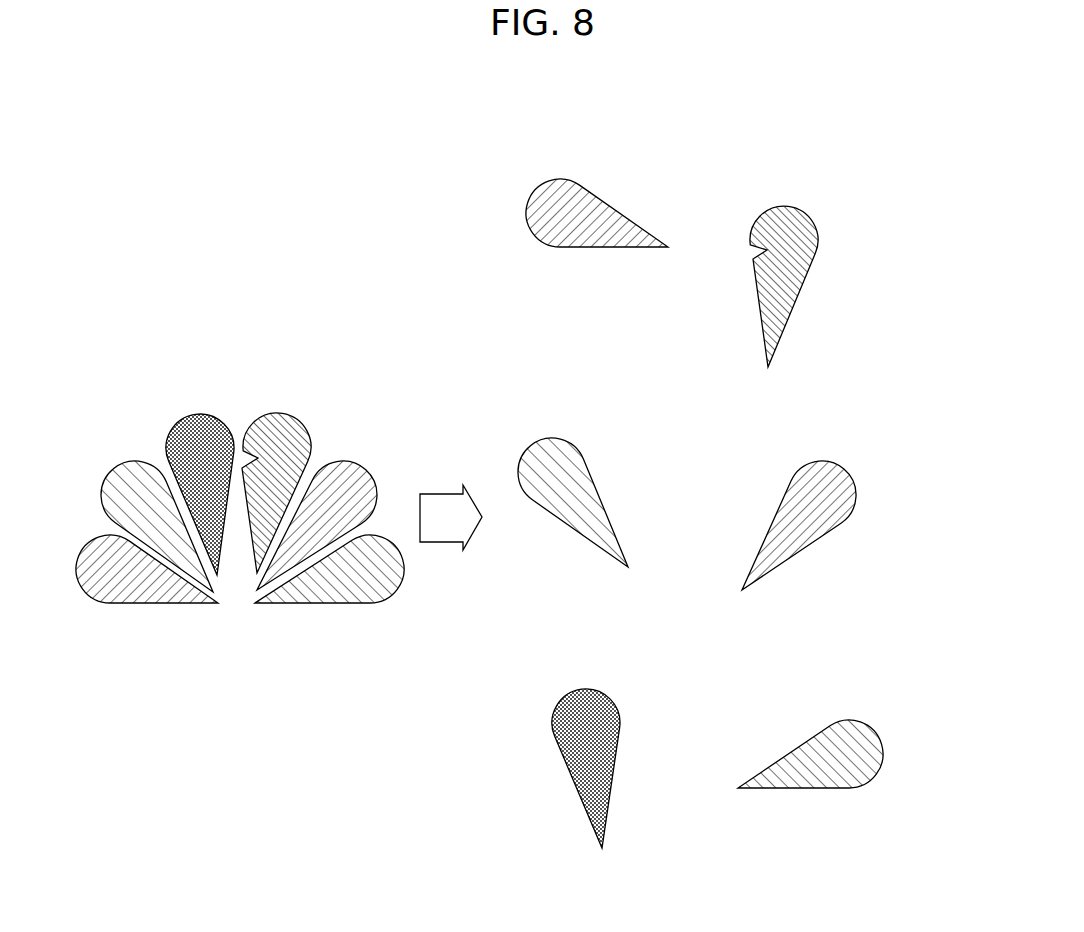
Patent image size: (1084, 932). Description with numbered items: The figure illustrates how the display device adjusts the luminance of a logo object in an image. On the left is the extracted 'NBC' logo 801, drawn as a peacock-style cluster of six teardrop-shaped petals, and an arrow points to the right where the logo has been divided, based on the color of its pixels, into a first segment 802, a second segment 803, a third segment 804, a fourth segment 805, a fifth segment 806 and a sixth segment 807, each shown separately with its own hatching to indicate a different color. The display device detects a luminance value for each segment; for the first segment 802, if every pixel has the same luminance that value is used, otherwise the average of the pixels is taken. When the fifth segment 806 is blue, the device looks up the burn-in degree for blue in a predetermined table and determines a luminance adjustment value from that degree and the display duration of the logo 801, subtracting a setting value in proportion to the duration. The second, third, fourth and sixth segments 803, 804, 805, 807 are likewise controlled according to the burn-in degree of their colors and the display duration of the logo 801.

The 'NBC' logo 801 is at (312, 391).
The first segment 802 is at (536, 190).
The second segment 803 is at (527, 449).
The third segment 804 is at (554, 711).
The fourth segment 805 is at (814, 223).
The fifth segment 806 is at (848, 474).
The sixth segment 807 is at (875, 733).